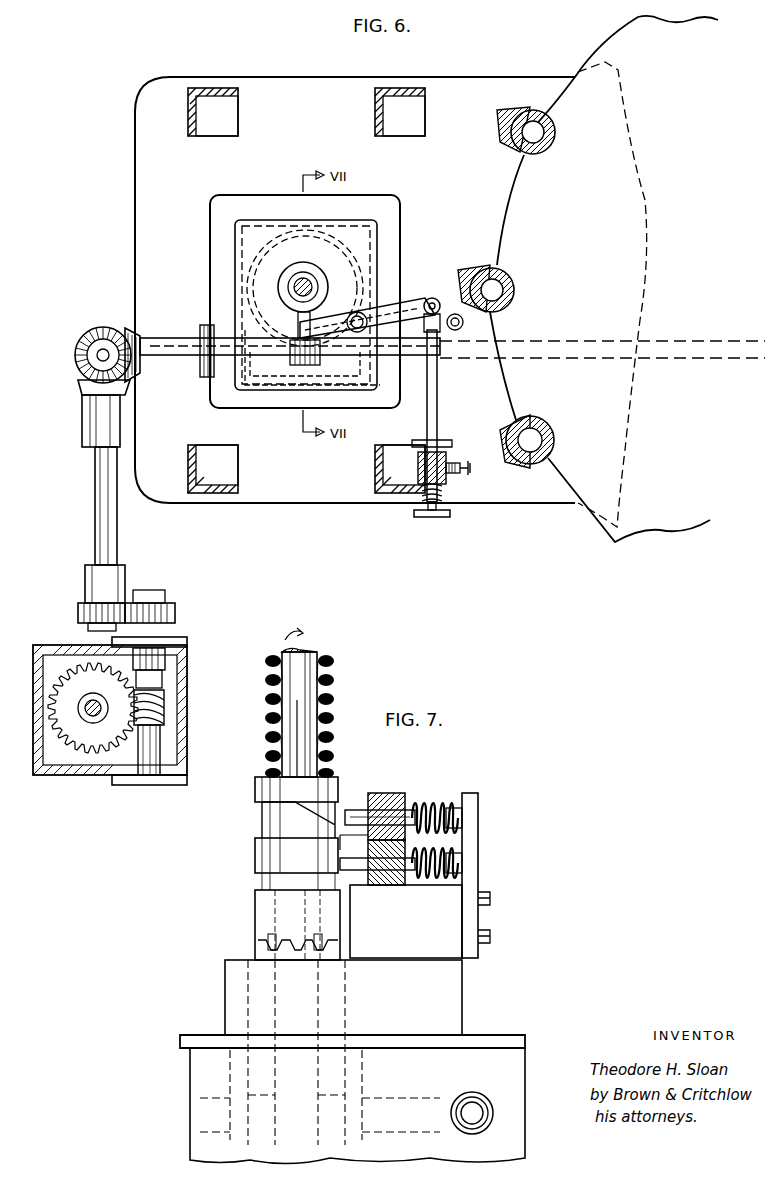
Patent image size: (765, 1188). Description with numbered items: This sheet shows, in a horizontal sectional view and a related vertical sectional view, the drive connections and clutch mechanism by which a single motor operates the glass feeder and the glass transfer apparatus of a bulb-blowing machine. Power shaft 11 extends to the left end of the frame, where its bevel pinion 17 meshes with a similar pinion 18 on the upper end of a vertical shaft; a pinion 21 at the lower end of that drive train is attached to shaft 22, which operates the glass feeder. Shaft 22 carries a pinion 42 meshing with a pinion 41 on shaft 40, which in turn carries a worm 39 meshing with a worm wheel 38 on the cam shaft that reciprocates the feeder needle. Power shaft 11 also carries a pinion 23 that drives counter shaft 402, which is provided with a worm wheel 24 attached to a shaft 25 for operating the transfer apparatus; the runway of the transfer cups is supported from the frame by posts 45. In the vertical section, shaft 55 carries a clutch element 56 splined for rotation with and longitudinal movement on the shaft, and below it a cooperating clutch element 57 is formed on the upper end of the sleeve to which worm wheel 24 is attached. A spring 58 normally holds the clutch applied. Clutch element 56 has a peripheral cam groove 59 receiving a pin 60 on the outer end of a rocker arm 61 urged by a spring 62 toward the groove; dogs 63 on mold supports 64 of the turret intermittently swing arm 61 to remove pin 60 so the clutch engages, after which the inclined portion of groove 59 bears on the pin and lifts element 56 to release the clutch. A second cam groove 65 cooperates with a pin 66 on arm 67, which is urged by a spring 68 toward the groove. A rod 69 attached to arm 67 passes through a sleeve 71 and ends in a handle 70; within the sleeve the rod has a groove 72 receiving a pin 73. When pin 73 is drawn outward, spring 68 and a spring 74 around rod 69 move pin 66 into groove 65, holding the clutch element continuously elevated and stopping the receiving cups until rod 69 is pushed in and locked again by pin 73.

In FIG. 6, the power shaft 11 is at (695, 340).
In FIG. 7, the power shaft 11 is at (478, 1113).
In FIG. 6, the bevel pinion 17 is at (128, 330).
In FIG. 6, the bevel pinion 18 is at (88, 340).
In FIG. 6, the bevel pinion 21 is at (78, 385).
In FIG. 6, the shaft 22 is at (95, 508).
In FIG. 6, the pinion 23 is at (205, 378).
In FIG. 7, the pinion 23 is at (492, 1110).
In FIG. 6, the worm wheel 24 is at (358, 250).
In FIG. 7, the worm wheel 24 is at (445, 1103).
In FIG. 6, the shaft 25 is at (312, 290).
In FIG. 6, the worm wheel 38 is at (93, 760).
In FIG. 6, the worm 39 is at (165, 702).
In FIG. 6, the shaft 40 is at (162, 682).
In FIG. 6, the pinion 41 is at (176, 614).
In FIG. 6, the pinion 42 is at (78, 613).
In FIG. 6, the posts 45 is at (212, 490).
In FIG. 6, the counter shaft 402 is at (256, 356).
In FIG. 7, the shaft 55 is at (307, 656).
In FIG. 7, the clutch element 56 is at (256, 913).
In FIG. 7, the clutch element 57 is at (258, 951).
In FIG. 7, the spring 58 is at (330, 676).
In FIG. 7, the cam groove 59 is at (310, 848).
In FIG. 7, the pin 60 is at (352, 870).
In FIG. 6, the rocker arm 61 is at (421, 336).
In FIG. 7, the rocker arm 61 is at (397, 882).
In FIG. 7, the spring 62 is at (470, 862).
In FIG. 6, the dogs 63 is at (502, 476).
In FIG. 6, the mold supports 64 is at (528, 468).
In FIG. 7, the cam groove 65 is at (262, 826).
In FIG. 7, the pin 66 is at (354, 812).
In FIG. 6, the arm 67 is at (402, 308).
In FIG. 7, the arm 67 is at (396, 797).
In FIG. 7, the spring 68 is at (432, 800).
In FIG. 6, the rod 69 is at (437, 403).
In FIG. 6, the handle 70 is at (425, 516).
In FIG. 6, the sleeve 71 is at (444, 458).
In FIG. 6, the groove 72 is at (424, 490).
In FIG. 6, the pin 73 is at (461, 466).
In FIG. 6, the spring 74 is at (440, 505).